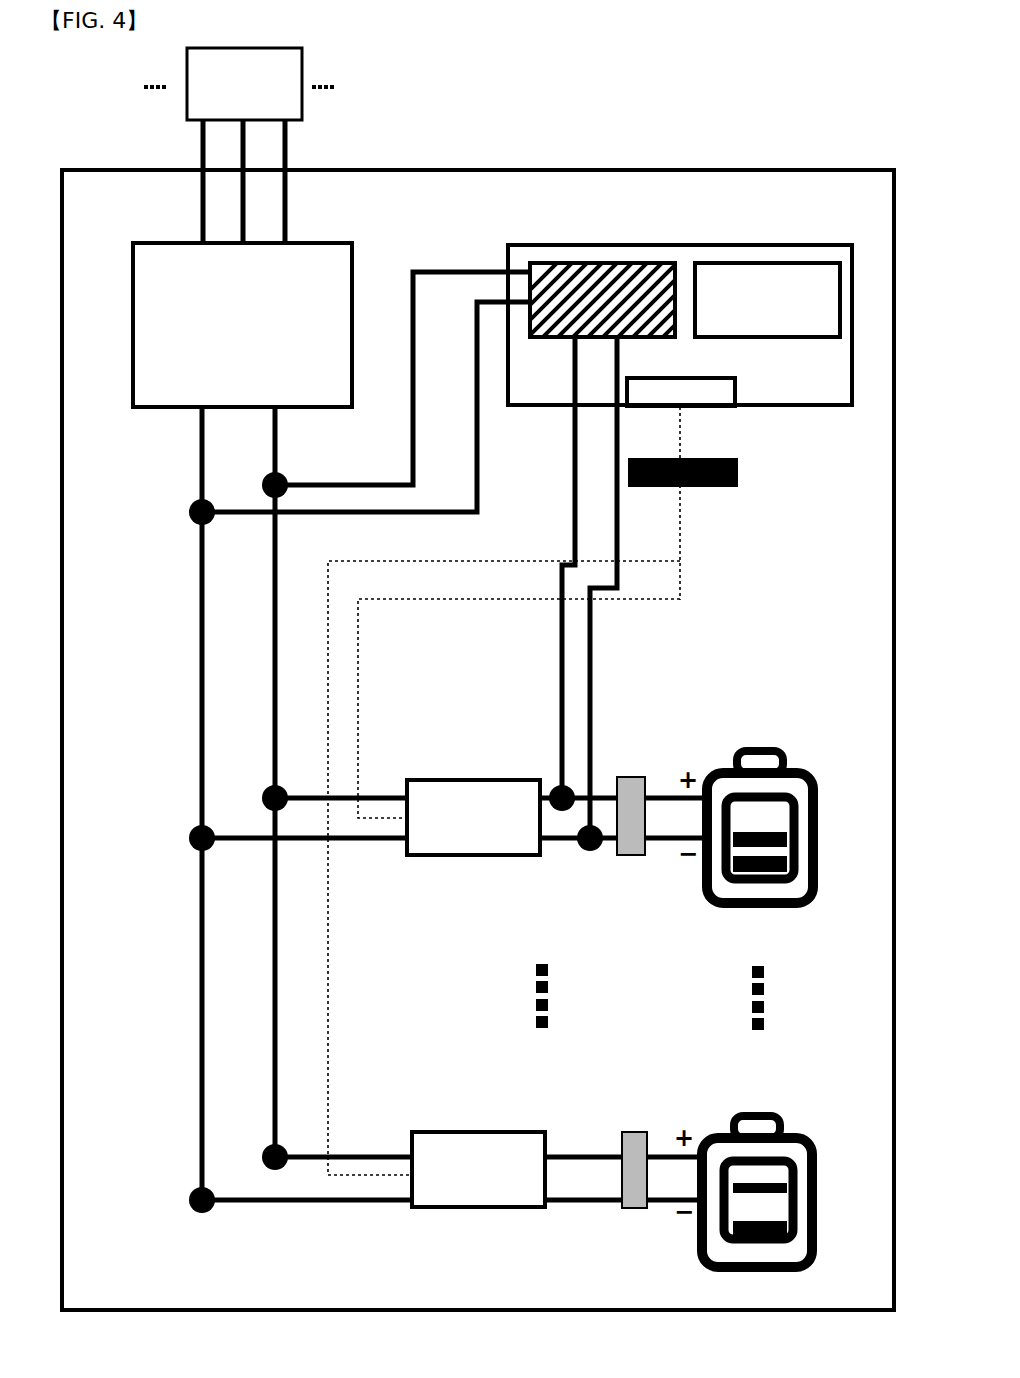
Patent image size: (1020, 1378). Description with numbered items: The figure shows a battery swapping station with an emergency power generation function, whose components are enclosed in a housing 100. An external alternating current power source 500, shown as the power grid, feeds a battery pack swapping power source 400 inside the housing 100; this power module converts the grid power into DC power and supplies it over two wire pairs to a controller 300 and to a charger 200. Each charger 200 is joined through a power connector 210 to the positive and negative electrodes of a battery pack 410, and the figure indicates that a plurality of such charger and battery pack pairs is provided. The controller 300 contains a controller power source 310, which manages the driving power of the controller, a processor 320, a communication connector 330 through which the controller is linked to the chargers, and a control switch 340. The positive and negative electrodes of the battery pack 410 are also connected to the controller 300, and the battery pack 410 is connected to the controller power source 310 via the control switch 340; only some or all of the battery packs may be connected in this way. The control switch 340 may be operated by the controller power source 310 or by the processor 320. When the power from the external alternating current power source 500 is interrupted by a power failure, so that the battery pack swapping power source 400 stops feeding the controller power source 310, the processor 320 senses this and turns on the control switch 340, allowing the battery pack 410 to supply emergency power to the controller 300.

The housing 100 is at (557, 170).
The charger 200 is at (420, 779).
The power connector 210 is at (637, 1130).
The controller 300 is at (523, 245).
The controller power source 310 is at (605, 262).
The processor 320 is at (738, 262).
The communication connector 330 is at (602, 373).
The control switch 340 is at (624, 449).
The battery pack swapping power source 400 is at (355, 248).
The battery pack 410 is at (752, 746).
The external alternating current power source 500 is at (305, 118).